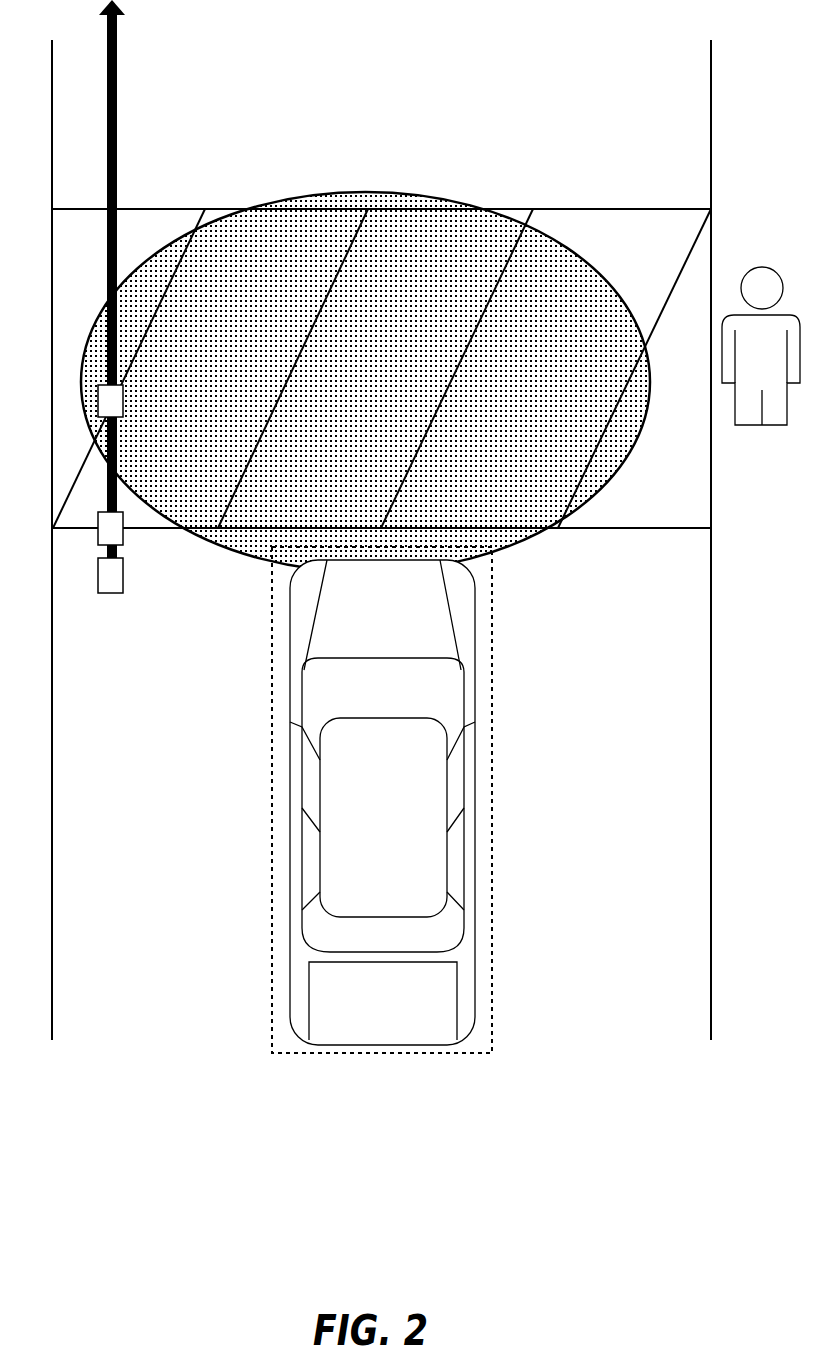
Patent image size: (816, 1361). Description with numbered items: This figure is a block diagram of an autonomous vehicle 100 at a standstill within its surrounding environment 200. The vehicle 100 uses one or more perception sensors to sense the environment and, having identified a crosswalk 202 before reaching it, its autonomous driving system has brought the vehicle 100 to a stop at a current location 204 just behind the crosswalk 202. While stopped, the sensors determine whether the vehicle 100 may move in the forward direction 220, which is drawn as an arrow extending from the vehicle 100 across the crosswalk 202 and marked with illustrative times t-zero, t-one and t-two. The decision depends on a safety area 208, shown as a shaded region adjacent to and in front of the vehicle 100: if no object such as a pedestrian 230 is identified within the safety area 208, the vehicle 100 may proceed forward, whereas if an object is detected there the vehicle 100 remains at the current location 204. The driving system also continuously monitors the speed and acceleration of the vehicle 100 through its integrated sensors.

The vehicle 100 is at (397, 829).
The roadway environment 200 is at (571, 729).
The crosswalk 202 is at (679, 509).
The current location 204 is at (271, 806).
The safety area 208 is at (393, 193).
The forward direction 220 is at (117, 57).
The pedestrian 230 is at (776, 357).